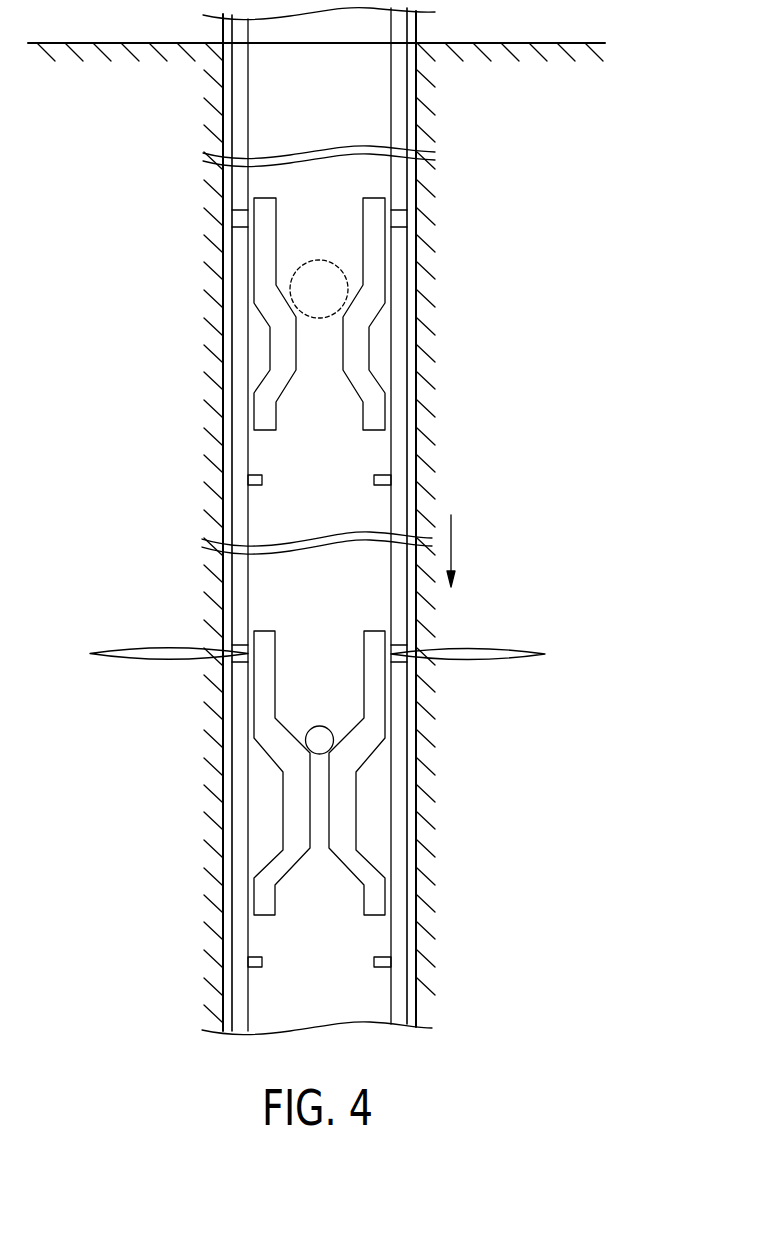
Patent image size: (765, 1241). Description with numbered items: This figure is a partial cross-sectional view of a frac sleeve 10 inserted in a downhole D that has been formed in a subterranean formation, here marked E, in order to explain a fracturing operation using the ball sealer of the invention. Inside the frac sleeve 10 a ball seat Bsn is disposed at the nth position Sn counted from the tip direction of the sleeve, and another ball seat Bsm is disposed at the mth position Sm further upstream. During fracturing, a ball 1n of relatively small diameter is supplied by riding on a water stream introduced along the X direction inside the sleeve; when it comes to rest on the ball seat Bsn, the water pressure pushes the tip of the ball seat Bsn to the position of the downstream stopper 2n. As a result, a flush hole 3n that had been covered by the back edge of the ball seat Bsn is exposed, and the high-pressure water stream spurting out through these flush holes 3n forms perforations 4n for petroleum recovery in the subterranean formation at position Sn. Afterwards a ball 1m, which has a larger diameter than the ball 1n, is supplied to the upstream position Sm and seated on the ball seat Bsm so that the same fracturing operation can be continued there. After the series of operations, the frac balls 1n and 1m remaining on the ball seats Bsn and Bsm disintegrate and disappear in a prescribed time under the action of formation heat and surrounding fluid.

The earth formation E is at (316, 532).
The frac sleeve 10 is at (407, 689).
The X direction X is at (458, 551).
The downhole D is at (222, 503).
The mth position Sm is at (361, 341).
The ball seat Bsm is at (372, 322).
The ball 1m is at (313, 261).
The nth position Sn is at (317, 805).
The ball seat Bsn is at (358, 770).
The ball 1n is at (312, 726).
The downstream stopper 2n is at (391, 962).
The flush hole 3n is at (238, 645).
The perforations 4n is at (125, 662).